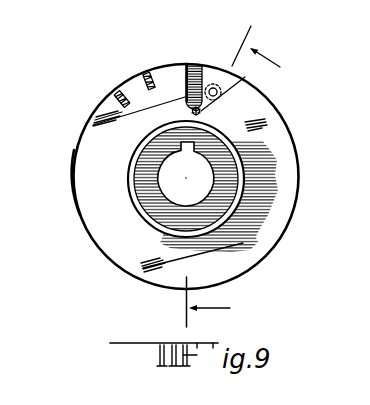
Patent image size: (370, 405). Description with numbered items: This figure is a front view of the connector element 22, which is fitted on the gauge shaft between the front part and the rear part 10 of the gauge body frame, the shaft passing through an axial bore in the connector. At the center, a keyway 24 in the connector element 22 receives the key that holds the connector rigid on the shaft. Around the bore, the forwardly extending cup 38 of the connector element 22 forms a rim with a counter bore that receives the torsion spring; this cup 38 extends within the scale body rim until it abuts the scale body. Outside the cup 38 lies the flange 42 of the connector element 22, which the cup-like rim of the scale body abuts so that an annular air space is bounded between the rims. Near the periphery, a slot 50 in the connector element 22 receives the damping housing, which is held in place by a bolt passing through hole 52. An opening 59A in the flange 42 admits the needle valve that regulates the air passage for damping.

The connector element 22 is at (309, 115).
The flange 42 is at (100, 202).
The forwardly extending cup 38 is at (243, 170).
The keyway 24 is at (148, 137).
The slot 50 is at (190, 66).
The hole 52 is at (214, 84).
The opening 59A is at (201, 112).
The rear part 10 is at (222, 17).